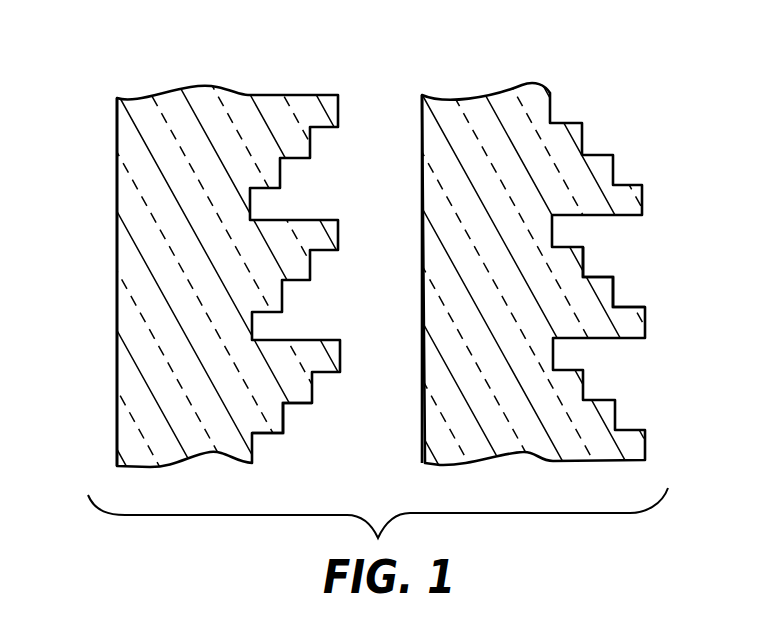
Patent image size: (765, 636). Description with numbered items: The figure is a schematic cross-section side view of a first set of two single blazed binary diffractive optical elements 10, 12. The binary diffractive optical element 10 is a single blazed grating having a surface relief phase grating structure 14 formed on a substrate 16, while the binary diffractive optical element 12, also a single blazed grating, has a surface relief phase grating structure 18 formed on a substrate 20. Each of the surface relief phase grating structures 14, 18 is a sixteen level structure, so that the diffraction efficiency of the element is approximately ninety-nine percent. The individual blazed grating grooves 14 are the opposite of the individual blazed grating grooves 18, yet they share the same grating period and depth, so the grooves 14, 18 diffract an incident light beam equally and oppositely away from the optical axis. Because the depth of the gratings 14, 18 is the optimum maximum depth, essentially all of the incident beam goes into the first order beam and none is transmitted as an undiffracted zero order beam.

The binary diffractive optical element 10 is at (208, 48).
The binary diffractive optical element 12 is at (510, 46).
The surface relief phase grating structure 14 is at (283, 433).
The substrate 16 is at (130, 202).
The surface relief phase grating structure 18 is at (613, 277).
The substrate 20 is at (432, 213).